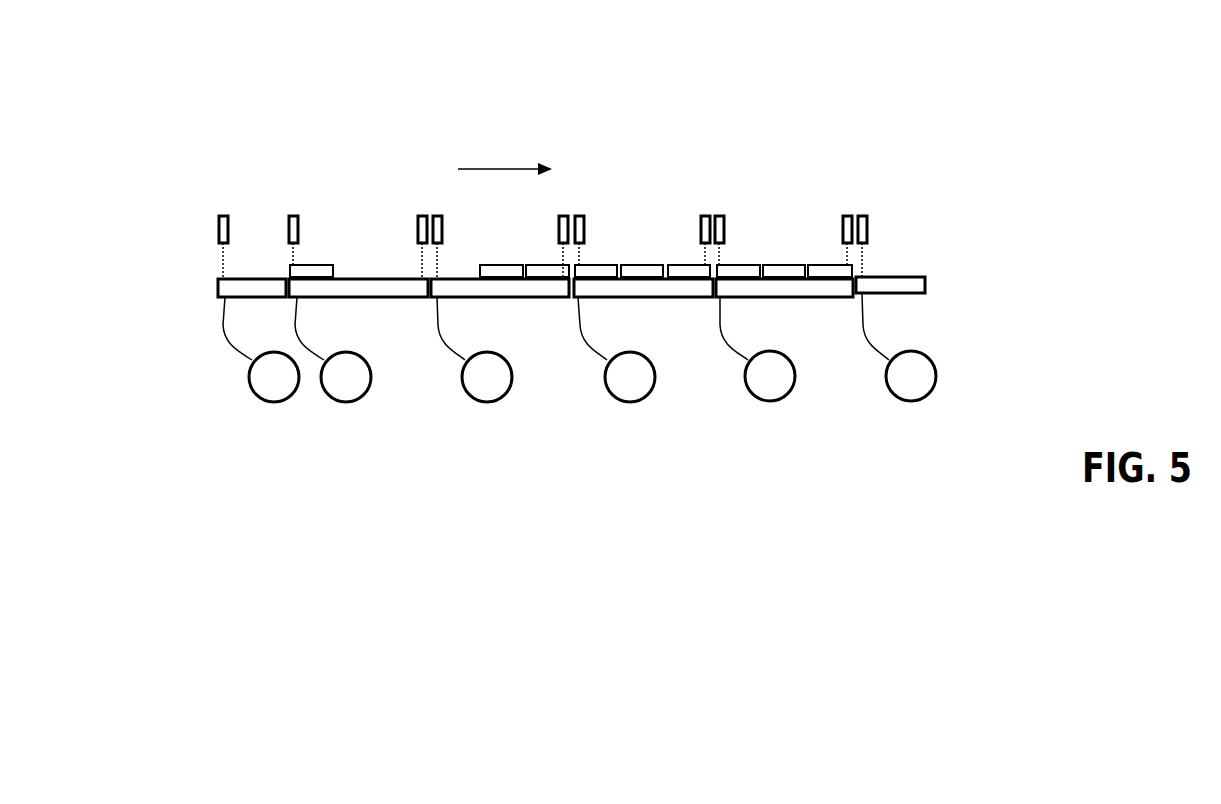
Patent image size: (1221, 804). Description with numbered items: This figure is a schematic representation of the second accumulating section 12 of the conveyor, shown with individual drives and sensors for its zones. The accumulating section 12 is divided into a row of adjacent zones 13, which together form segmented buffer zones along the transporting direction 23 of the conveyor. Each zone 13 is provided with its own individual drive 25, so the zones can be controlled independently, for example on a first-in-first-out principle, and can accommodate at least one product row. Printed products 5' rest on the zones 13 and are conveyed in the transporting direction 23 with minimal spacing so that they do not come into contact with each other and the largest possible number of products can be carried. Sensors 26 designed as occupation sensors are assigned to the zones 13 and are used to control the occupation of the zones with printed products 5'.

The second accumulating section 12 is at (950, 280).
The zone 13 is at (255, 279).
The printed product 5' is at (571, 182).
The transporting direction 23 is at (502, 168).
The individual drive 25 is at (275, 402).
The sensor 26 is at (225, 215).